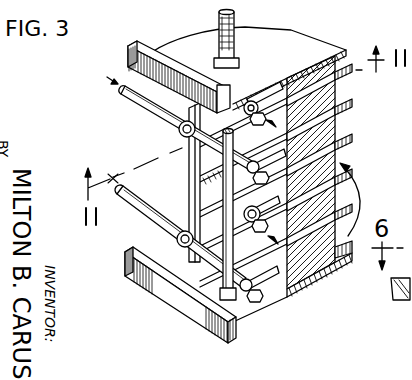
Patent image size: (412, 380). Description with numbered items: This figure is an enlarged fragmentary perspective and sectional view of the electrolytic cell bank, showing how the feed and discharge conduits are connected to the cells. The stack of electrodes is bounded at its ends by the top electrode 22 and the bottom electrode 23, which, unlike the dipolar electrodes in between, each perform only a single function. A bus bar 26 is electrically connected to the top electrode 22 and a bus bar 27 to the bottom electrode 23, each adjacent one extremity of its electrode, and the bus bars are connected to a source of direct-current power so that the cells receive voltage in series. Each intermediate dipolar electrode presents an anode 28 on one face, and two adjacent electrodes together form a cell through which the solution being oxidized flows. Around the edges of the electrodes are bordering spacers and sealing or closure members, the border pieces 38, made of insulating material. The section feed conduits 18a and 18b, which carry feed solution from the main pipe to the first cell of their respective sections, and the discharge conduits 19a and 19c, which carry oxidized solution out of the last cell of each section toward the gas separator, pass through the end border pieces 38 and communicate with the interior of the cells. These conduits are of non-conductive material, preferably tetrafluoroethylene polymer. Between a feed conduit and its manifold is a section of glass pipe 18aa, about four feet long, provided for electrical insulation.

The top electrode 22 is at (292, 31).
The bottom electrode 23 is at (290, 302).
The bus bar 26 is at (146, 50).
The bus bar 27 is at (229, 338).
The anode 28 is at (346, 257).
The border piece 38 is at (331, 271).
The section feed conduit 18a is at (265, 303).
The glass pipe section 18aa is at (174, 243).
The section feed conduit 18b is at (263, 159).
The discharge conduit 19a is at (252, 228).
The discharge conduit 19c is at (258, 100).